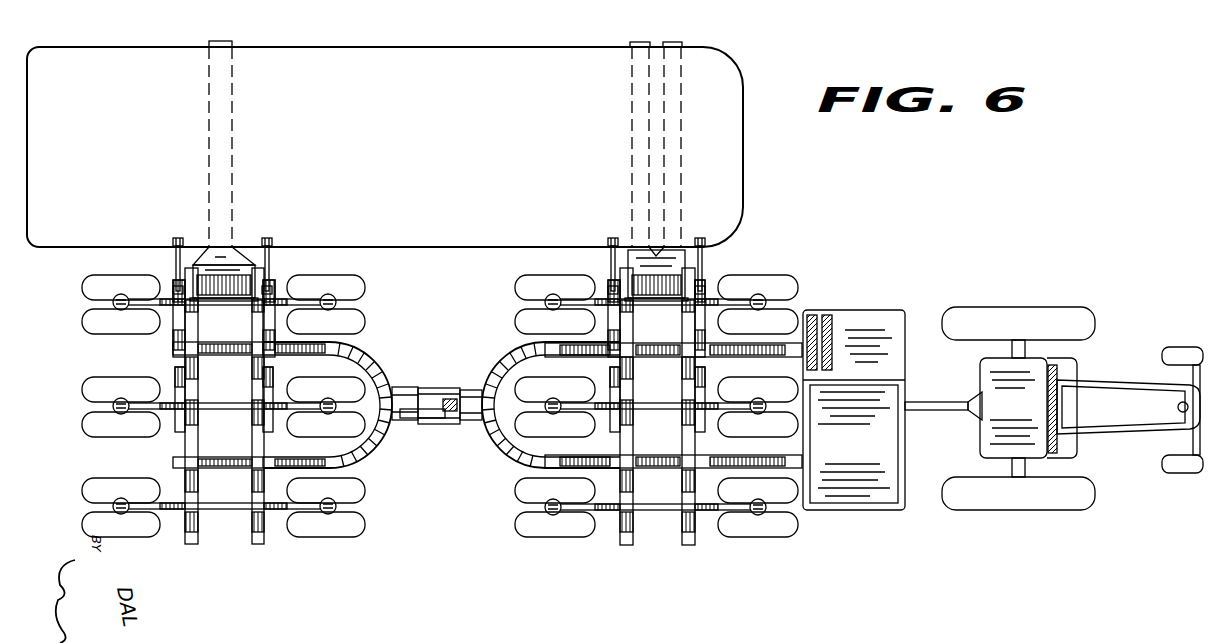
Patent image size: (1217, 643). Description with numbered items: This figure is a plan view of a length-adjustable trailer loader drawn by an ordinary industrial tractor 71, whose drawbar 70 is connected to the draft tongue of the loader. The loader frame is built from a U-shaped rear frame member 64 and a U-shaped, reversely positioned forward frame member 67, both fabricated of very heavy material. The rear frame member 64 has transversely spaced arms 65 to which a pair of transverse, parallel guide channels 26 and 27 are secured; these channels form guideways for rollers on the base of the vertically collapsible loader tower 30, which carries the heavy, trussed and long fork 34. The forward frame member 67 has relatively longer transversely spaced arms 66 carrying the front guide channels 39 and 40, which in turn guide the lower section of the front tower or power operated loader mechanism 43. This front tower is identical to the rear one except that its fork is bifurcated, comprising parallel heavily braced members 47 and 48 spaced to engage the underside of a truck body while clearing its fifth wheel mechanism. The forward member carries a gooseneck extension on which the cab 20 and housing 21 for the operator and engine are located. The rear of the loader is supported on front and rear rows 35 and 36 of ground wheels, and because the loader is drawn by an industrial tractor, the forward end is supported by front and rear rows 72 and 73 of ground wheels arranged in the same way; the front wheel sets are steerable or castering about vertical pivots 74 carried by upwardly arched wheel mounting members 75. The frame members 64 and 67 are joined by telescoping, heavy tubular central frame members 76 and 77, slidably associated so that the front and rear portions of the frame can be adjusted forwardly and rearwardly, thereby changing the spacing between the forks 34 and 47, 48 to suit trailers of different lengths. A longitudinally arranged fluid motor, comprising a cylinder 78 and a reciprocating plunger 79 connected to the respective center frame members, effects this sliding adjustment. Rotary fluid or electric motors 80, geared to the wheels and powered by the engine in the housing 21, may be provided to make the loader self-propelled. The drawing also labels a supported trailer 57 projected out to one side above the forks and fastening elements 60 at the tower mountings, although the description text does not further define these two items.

The cab 20 is at (873, 316).
The housing 21 is at (845, 453).
The rear guide channel 26 is at (262, 546).
The rear guide channel 27 is at (190, 546).
The loader tower 30 is at (233, 304).
The fork 34 is at (234, 161).
The front row of rear ground wheels 35 is at (341, 542).
The rear row of rear ground wheels 36 is at (138, 540).
The front guide channel 39 is at (695, 546).
The front guide channel 40 is at (626, 547).
The power operated loader mechanism 43 is at (656, 304).
The fork member 47 is at (681, 170).
The fork member 48 is at (632, 168).
The tank 57 is at (389, 170).
The bolts 60 is at (271, 270).
The rear frame member 64 is at (341, 346).
The arms of rear frame member 65 is at (325, 352).
The arms of forward frame member 66 is at (664, 357).
The forward frame member 67 is at (511, 463).
The drawbar 70 is at (932, 403).
The industrial tractor 71 is at (1070, 310).
The front row of front ground wheels 72 is at (783, 542).
The rear row of front ground wheels 73 is at (562, 540).
The vertical pivots 74 is at (766, 299).
The wheel mounting members 75 is at (737, 299).
The central frame member 76 is at (470, 390).
The central frame member 77 is at (405, 387).
The cylinder 78 is at (450, 399).
The plunger 79 is at (428, 419).
The rotary motors 80 is at (705, 268).